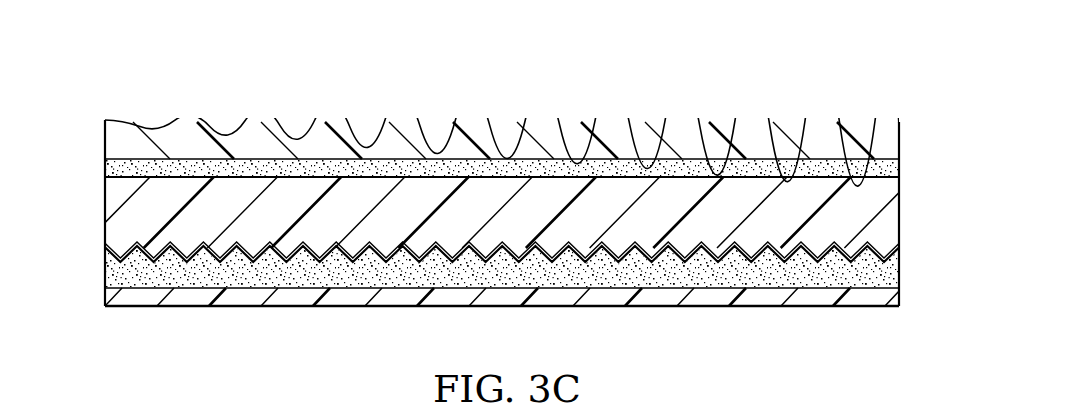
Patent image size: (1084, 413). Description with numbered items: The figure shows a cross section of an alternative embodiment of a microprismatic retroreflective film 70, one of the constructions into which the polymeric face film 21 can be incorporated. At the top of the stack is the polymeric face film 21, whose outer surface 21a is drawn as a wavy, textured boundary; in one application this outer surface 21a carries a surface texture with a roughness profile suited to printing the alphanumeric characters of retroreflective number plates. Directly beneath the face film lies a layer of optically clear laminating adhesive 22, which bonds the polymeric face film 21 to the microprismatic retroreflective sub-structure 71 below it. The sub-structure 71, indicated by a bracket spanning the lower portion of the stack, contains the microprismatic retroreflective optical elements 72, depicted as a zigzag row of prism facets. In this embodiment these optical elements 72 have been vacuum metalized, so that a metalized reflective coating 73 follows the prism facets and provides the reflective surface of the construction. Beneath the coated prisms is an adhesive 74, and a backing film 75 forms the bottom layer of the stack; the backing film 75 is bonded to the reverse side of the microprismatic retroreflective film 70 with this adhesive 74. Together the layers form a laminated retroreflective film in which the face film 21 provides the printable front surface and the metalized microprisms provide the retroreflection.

The microprismatic retroreflective film 70 is at (502, 197).
The polymeric face film 21 is at (502, 122).
The outer surface 21a is at (242, 125).
The optically clear laminating adhesive 22 is at (893, 168).
The microprismatic retroreflective sub-structure 71 is at (502, 273).
The microprismatic retroreflective optical elements 72 is at (452, 248).
The metalized reflective coating 73 is at (672, 273).
The adhesive 74 is at (893, 272).
The backing film 75 is at (240, 298).